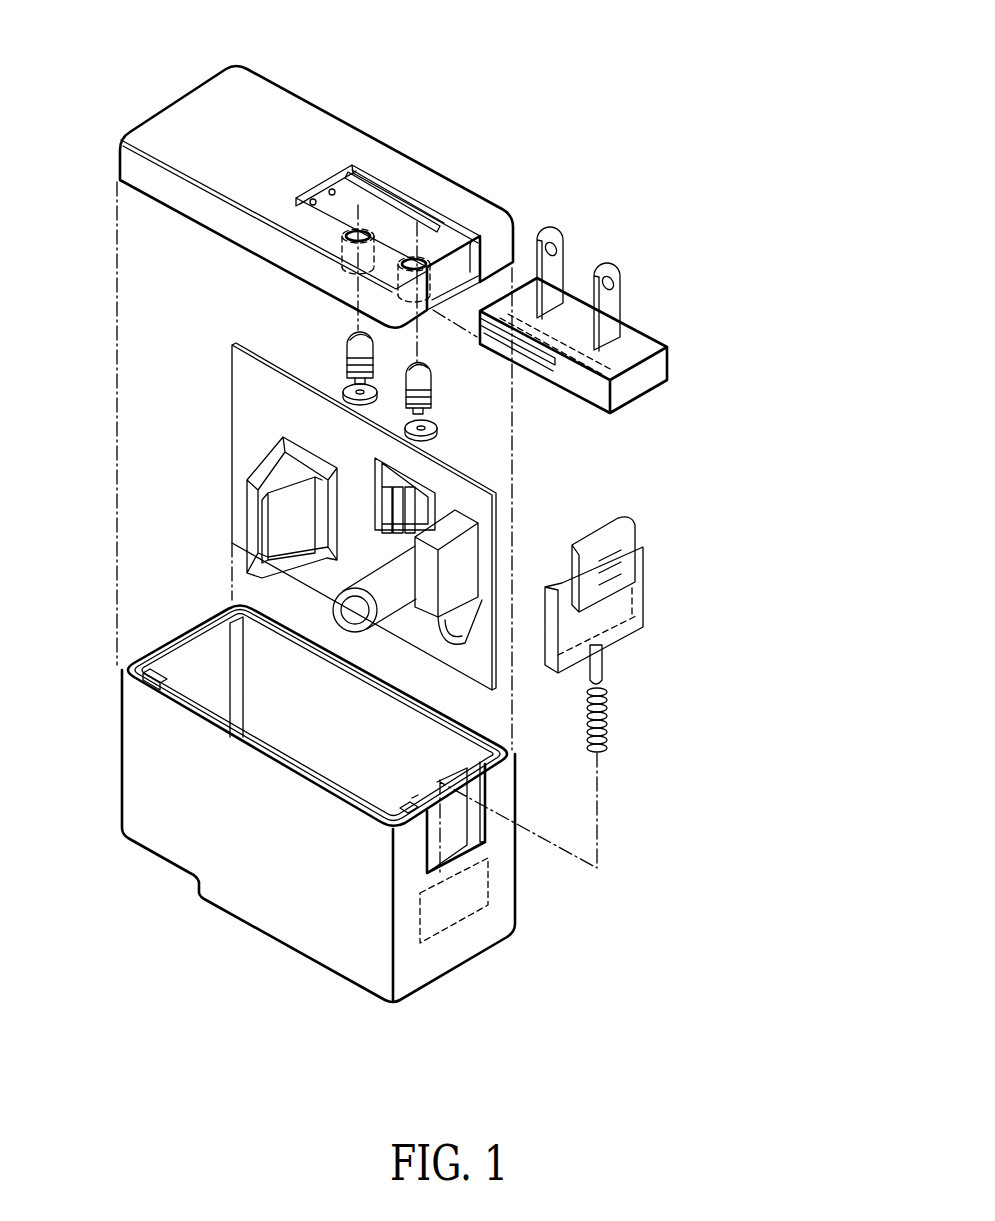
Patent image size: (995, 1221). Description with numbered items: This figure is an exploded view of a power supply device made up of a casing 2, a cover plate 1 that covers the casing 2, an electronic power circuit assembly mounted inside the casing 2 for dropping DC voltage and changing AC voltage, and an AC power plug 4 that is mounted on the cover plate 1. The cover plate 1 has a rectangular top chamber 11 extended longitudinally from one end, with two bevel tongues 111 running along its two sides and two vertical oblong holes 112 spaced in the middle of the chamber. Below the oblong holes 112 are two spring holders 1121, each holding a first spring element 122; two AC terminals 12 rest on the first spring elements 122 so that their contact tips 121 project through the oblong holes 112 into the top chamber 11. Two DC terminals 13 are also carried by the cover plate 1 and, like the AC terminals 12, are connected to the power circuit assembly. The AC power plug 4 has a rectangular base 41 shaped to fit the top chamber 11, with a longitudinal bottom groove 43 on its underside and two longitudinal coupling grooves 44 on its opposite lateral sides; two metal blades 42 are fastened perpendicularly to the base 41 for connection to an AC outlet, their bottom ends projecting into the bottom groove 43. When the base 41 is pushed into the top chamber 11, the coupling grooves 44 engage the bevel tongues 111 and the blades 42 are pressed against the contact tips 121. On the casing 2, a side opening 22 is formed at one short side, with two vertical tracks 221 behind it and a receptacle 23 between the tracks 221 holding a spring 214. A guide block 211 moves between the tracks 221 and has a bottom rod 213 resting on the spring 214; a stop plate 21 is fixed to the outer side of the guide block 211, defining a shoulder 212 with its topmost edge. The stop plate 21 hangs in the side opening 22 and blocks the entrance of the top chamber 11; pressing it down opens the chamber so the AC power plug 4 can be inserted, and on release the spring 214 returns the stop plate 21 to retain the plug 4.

The cover plate 1 is at (280, 100).
The rectangular top chamber 11 is at (469, 248).
The bevel tongues 111 is at (367, 192).
The vertical oblong holes 112 is at (443, 252).
The spring holders 1121 is at (400, 287).
The AC terminals 12 is at (420, 396).
The contact tip 121 is at (429, 361).
The first spring elements 122 is at (436, 412).
The DC terminals 13 is at (335, 185).
The casing 2 is at (147, 792).
The stop plate 21 is at (635, 618).
The guide block 211 is at (644, 606).
The shoulder 212 is at (575, 572).
The bottom rod 213 is at (603, 667).
The spring 214 is at (607, 730).
The side opening 22 is at (447, 826).
The vertical tracks 221 is at (407, 812).
The receptacle 23 is at (443, 877).
The AC power plug 4 is at (624, 328).
The rectangular base 41 is at (643, 343).
The metal blades 42 is at (610, 258).
The longitudinal bottom groove 43 is at (625, 372).
The longitudinal coupling grooves 44 is at (545, 365).